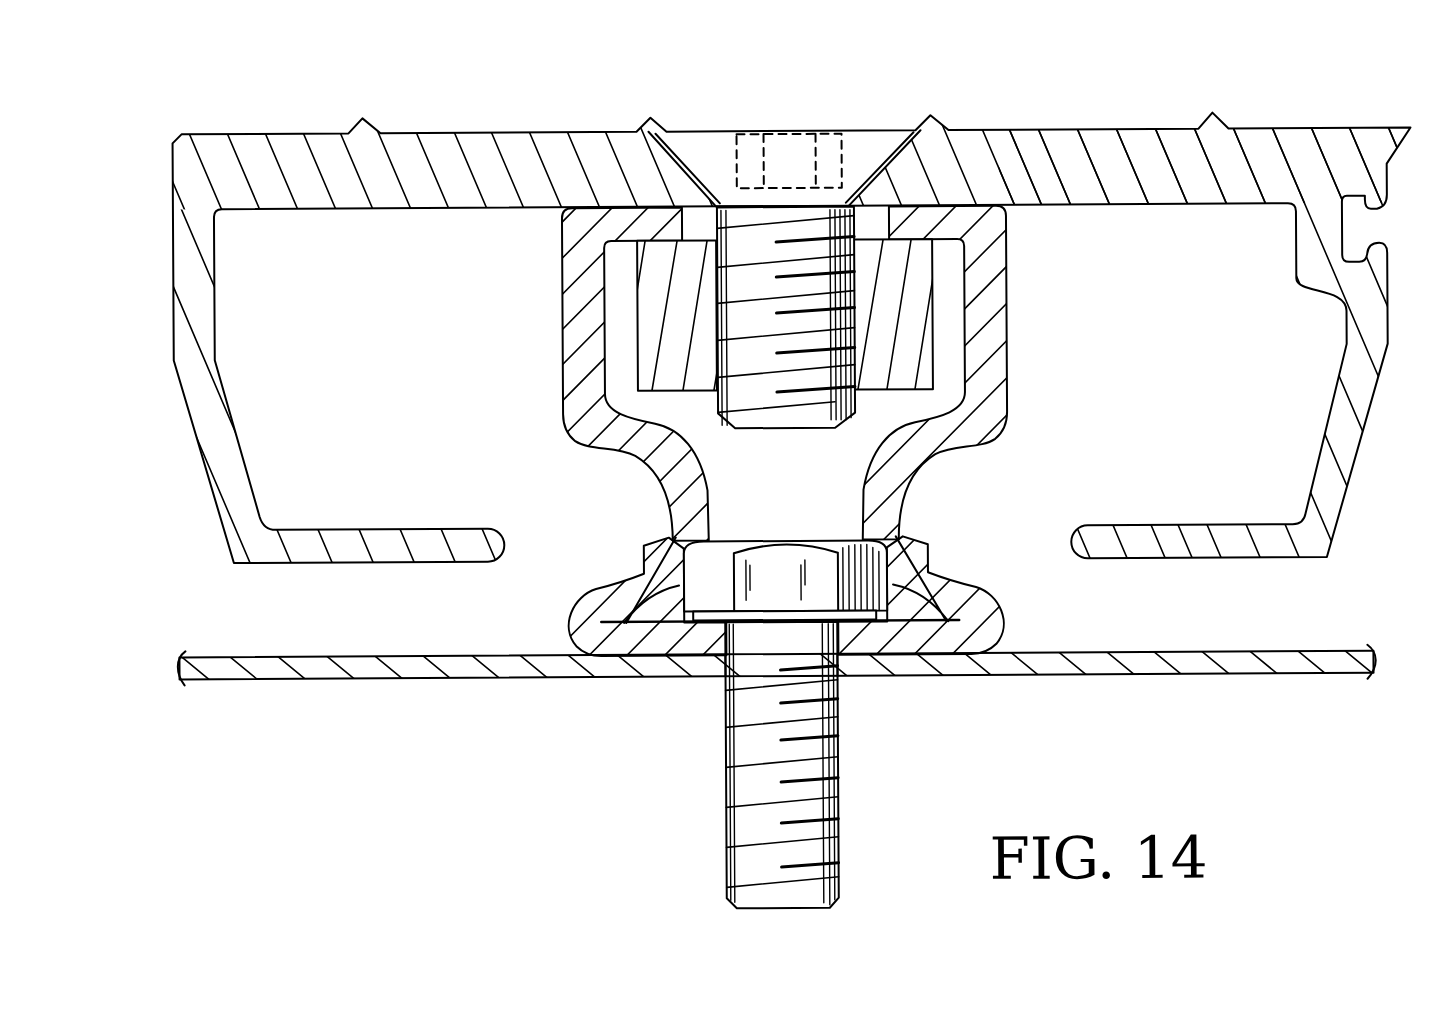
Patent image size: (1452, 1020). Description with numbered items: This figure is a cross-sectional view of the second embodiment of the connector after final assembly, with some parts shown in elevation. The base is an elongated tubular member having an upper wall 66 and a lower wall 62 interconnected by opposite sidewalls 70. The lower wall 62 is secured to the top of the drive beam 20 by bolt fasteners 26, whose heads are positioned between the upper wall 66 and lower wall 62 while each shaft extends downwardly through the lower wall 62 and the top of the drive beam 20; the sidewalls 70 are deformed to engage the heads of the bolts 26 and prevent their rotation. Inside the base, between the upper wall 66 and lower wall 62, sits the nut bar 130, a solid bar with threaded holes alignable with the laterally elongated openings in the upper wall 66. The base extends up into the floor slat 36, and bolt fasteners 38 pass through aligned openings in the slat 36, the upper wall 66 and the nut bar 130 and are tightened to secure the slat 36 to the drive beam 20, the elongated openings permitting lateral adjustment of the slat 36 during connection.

The floor slat 36 is at (1370, 137).
The bolt fastener 38 is at (872, 136).
The upper wall 66 is at (761, 320).
The sidewall 70 is at (565, 357).
The nut bar 130 is at (703, 382).
The bolt fastener 26 is at (836, 822).
The drive beam 20 is at (1258, 662).
The lower wall 62 is at (940, 636).